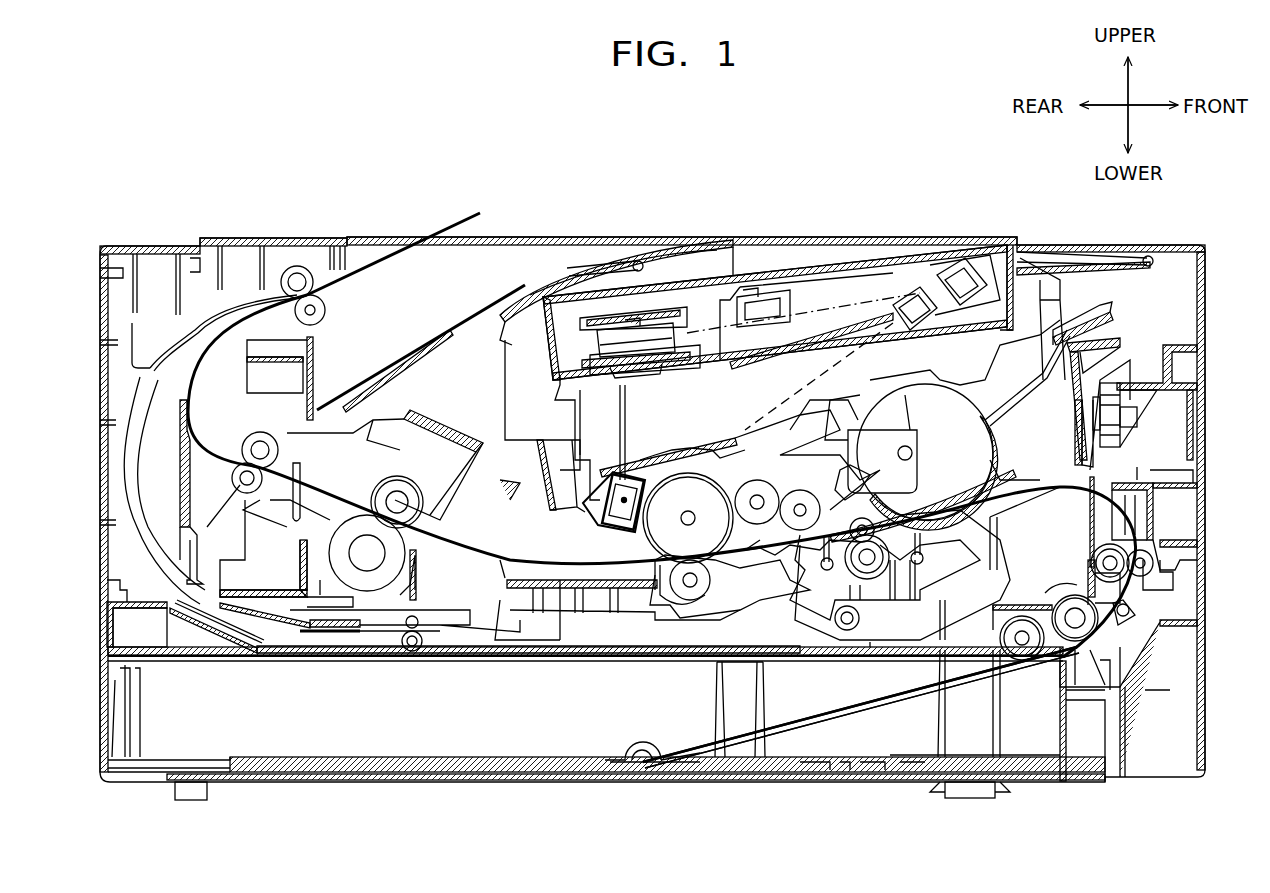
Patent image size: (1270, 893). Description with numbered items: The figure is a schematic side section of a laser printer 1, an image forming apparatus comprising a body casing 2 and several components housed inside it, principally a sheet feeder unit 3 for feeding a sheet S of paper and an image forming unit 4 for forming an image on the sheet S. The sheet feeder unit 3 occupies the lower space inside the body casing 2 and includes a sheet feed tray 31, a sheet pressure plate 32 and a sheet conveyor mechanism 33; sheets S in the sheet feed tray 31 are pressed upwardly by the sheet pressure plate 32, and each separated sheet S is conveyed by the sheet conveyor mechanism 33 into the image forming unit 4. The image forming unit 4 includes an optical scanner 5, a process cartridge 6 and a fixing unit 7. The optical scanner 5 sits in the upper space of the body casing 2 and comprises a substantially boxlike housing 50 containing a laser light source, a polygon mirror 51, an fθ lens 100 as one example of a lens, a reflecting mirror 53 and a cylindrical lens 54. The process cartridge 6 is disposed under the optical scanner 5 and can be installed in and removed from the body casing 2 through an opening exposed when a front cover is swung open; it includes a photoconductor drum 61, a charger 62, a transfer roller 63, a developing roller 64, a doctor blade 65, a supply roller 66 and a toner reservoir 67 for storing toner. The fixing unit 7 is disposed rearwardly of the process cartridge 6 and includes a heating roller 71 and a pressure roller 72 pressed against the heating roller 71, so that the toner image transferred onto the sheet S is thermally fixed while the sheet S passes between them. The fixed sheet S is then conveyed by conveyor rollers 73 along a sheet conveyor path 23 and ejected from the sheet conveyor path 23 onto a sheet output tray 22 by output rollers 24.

The laser printer 1 is at (800, 140).
The body casing 2 is at (867, 238).
The sheet feeder unit 3 is at (1212, 547).
The image forming unit 4 is at (1163, 287).
The optical scanner 5 is at (827, 277).
The process cartridge 6 is at (1092, 312).
The fixing unit 7 is at (467, 420).
The sheet output tray 22 is at (512, 300).
The sheet conveyor path 23 is at (200, 332).
The output rollers 24 is at (307, 290).
The sheet feed tray 31 is at (1205, 662).
The sheet pressure plate 32 is at (808, 727).
The sheet conveyor mechanism 33 is at (1054, 587).
The housing 50 is at (608, 300).
The polygon mirror 51 is at (665, 320).
The reflecting mirror 53 is at (950, 275).
The cylindrical lens 54 is at (898, 300).
The photoconductor drum 61 is at (688, 472).
The charger 62 is at (628, 480).
The transfer roller 63 is at (690, 602).
The developing roller 64 is at (752, 490).
The doctor blade 65 is at (780, 502).
The supply roller 66 is at (822, 528).
The toner reservoir 67 is at (960, 441).
The heating roller 71 is at (420, 490).
The pressure roller 72 is at (338, 565).
The conveyor rollers 73 is at (243, 497).
The fθ lens 100 is at (752, 297).
The sheet S is at (453, 228).